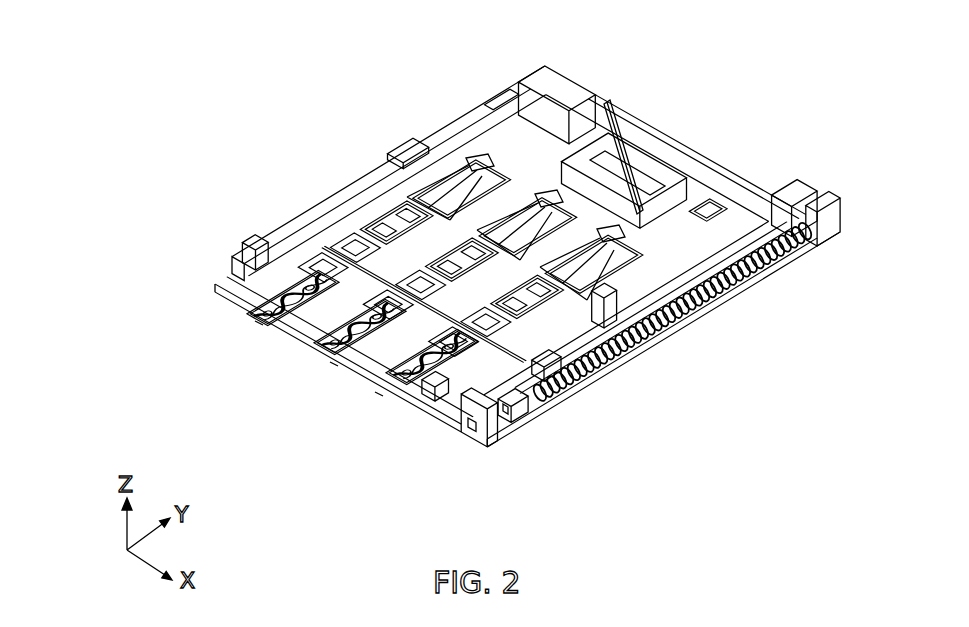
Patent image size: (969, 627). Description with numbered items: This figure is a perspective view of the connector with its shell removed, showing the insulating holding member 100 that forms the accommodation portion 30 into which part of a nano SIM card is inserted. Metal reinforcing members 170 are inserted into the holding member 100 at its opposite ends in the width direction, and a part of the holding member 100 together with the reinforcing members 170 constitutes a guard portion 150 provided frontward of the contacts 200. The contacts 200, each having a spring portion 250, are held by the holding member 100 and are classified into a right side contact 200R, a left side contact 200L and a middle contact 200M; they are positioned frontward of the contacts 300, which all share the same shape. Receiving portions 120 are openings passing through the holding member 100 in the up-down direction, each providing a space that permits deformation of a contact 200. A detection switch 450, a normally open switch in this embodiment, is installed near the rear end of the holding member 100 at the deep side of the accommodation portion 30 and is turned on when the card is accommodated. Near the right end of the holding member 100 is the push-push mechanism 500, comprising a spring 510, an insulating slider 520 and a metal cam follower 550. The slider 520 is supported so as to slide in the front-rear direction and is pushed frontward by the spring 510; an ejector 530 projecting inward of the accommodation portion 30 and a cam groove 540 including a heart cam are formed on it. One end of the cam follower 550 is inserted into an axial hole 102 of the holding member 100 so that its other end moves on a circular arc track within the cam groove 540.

The holding member 100 is at (300, 252).
The axial hole 102 is at (463, 392).
The receiving portion 120 is at (262, 233).
The guard portion 150 is at (275, 333).
The reinforcing member 170 is at (345, 190).
The accommodation portion 30 is at (397, 188).
The contact 200 is at (297, 383).
The left side contact 200L is at (222, 286).
The middle contact 200M is at (330, 325).
The right side contact 200R is at (398, 393).
The spring portion 250 is at (263, 328).
The contact 300 is at (478, 148).
The detection switch 450 is at (640, 175).
The push-push mechanism 500 is at (652, 349).
The spring 510 is at (627, 343).
The slider 520 is at (660, 325).
The ejector 530 is at (683, 300).
The cam groove 540 is at (557, 377).
The cam follower 550 is at (543, 422).